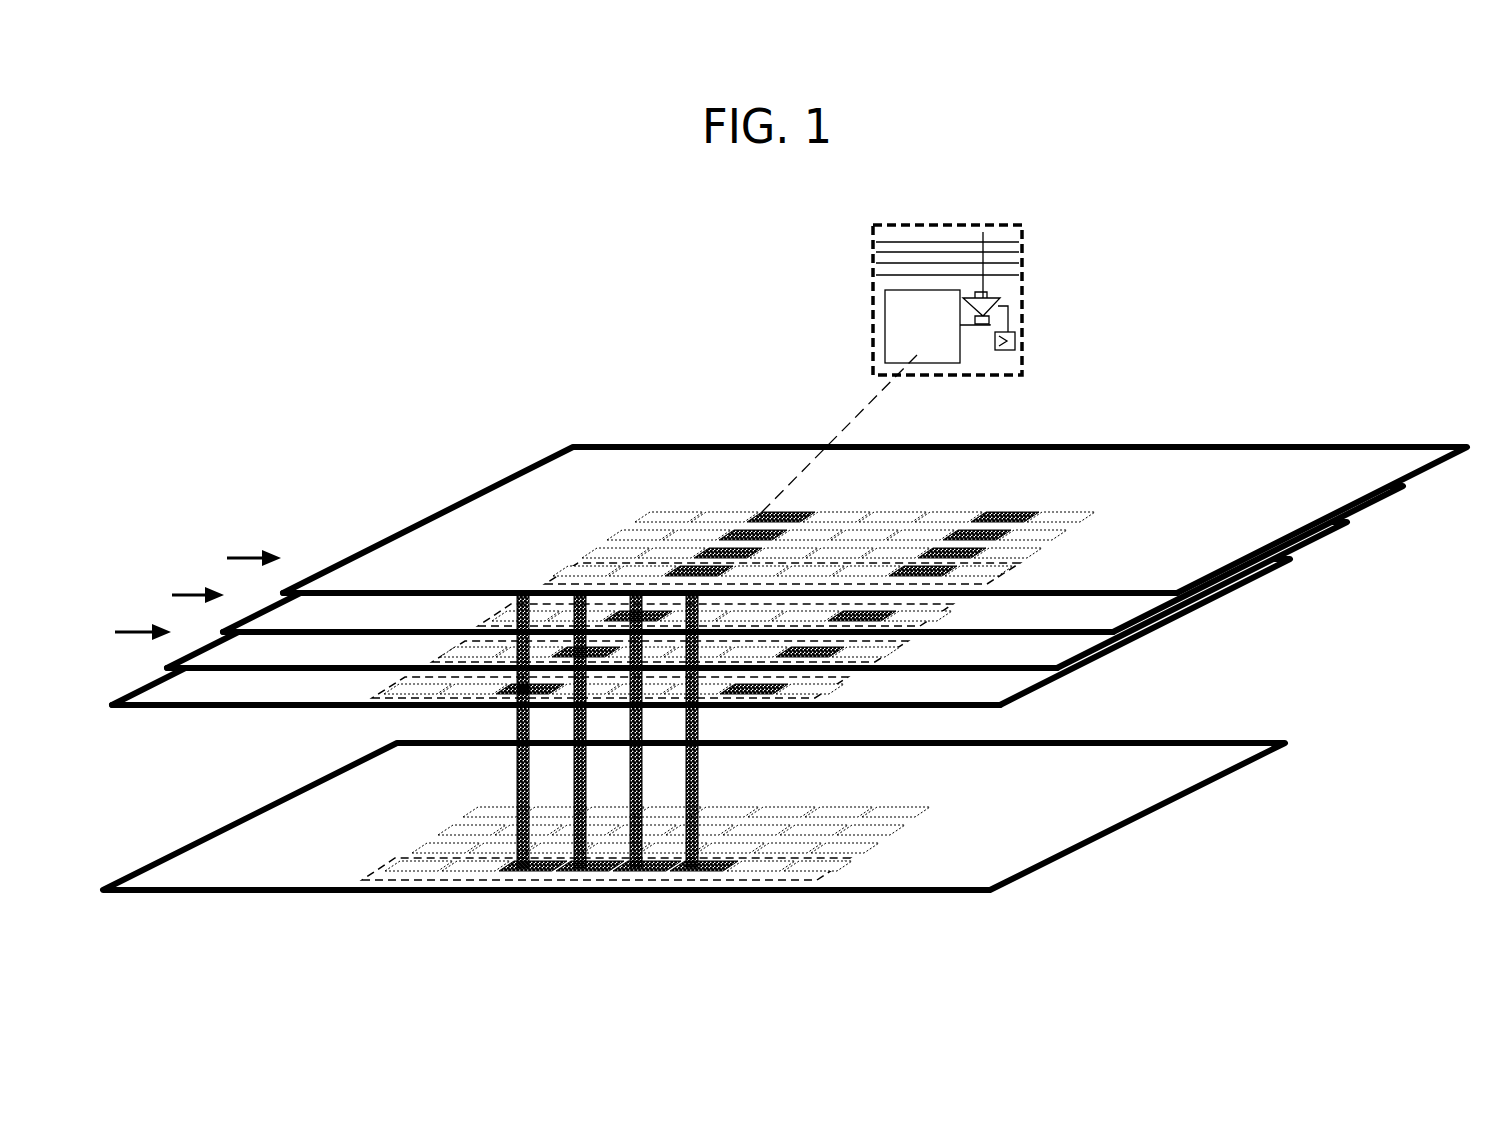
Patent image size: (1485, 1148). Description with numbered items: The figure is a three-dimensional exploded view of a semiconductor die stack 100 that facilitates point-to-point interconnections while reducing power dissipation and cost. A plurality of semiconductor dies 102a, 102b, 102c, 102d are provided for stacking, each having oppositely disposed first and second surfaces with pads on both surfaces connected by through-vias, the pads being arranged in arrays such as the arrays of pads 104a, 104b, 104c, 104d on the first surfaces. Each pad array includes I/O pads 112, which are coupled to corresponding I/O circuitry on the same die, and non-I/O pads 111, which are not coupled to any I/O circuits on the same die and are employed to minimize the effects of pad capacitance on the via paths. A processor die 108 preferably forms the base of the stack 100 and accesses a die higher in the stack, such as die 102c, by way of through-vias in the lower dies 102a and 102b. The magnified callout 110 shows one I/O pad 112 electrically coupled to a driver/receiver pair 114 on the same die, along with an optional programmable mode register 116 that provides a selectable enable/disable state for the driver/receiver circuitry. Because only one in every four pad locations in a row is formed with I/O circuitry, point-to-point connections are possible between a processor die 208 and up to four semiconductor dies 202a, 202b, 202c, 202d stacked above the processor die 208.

The semiconductor die stack 100 is at (420, 443).
The semiconductor die 102a is at (232, 704).
The semiconductor die 102b is at (288, 667).
The semiconductor die 102c is at (337, 631).
The semiconductor die 102d is at (403, 593).
The array of pads 104a is at (391, 678).
The array of pads 104b is at (457, 643).
The array of pads 104c is at (500, 606).
The array of pads 104d is at (809, 530).
The processor die 108 is at (232, 879).
The magnified callout 110 is at (875, 313).
The non-I/O pad 111 is at (835, 513).
The I/O pad 112 is at (885, 327).
The driver/receiver pair 114 is at (1003, 299).
The programmable mode register 116 is at (1018, 342).
The semiconductor die 202a is at (842, 704).
The semiconductor die 202b is at (897, 668).
The semiconductor die 202c is at (962, 631).
The semiconductor die 202d is at (1022, 575).
The processor die 208 is at (846, 868).